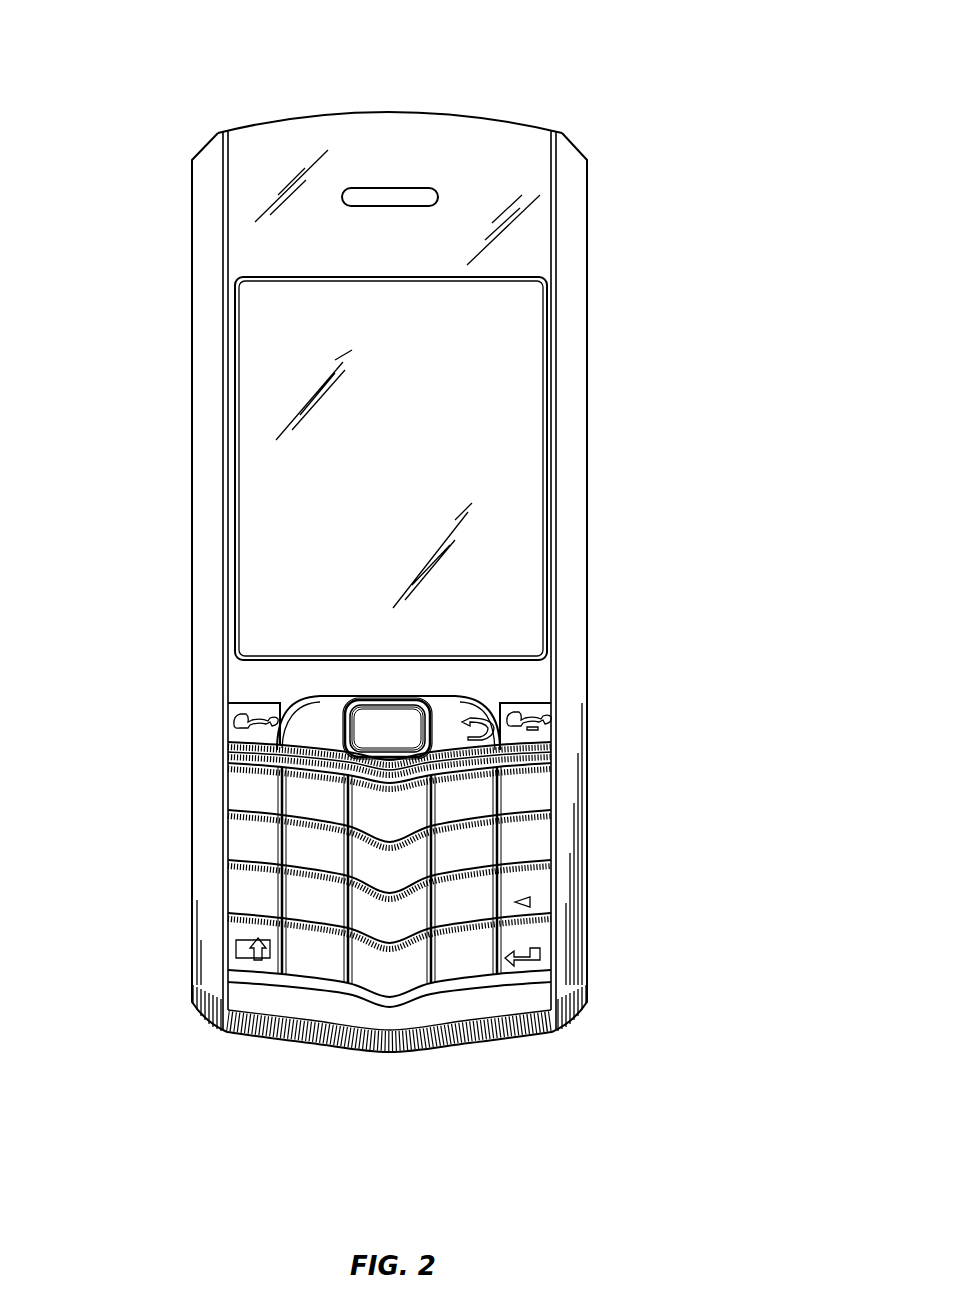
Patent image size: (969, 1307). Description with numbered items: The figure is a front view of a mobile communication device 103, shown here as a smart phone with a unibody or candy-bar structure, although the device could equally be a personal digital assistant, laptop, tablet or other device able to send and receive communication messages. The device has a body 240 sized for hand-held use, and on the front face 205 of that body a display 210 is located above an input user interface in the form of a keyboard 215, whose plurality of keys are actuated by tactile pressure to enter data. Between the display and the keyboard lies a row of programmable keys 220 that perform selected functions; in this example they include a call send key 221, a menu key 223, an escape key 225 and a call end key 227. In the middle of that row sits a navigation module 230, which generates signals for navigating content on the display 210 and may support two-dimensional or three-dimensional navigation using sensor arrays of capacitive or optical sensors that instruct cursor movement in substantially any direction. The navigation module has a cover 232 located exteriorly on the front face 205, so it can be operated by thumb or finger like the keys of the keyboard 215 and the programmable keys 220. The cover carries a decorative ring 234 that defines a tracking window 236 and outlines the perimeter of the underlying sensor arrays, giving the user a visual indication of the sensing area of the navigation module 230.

The mobile communication device 103 is at (537, 46).
The front face 205 is at (570, 196).
The display 210 is at (263, 320).
The keyboard 215 is at (400, 1013).
The row of programmable keys 220 is at (213, 750).
The call send key 221 is at (255, 707).
The menu key 223 is at (317, 712).
The escape key 225 is at (463, 705).
The call end key 227 is at (523, 707).
The navigation module 230 is at (370, 733).
The cover 232 is at (372, 739).
The decorative ring 234 is at (370, 700).
The tracking window 236 is at (387, 721).
The body 240 is at (186, 161).